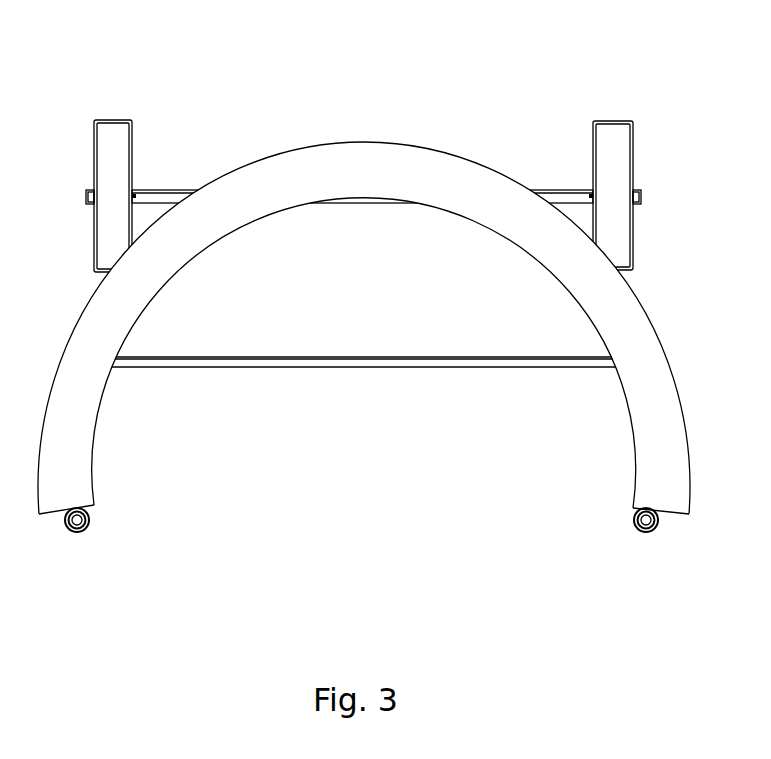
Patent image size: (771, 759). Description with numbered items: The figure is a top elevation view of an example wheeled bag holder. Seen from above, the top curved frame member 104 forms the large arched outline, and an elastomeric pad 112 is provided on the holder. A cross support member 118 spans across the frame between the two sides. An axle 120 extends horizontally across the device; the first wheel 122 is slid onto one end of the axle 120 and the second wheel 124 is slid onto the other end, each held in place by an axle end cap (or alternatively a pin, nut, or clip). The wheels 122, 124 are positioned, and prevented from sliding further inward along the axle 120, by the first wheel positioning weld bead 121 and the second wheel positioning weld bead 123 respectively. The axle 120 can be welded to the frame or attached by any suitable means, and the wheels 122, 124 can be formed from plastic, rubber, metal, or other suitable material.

The top curved frame member 104 is at (85, 528).
The elastomeric pad 112 is at (363, 176).
The cross support member 118 is at (247, 363).
The axle 120 is at (158, 197).
The first wheel positioning weld bead 121 is at (135, 190).
The first wheel 122 is at (113, 142).
The second wheel positioning weld bead 123 is at (592, 192).
The second wheel 124 is at (609, 155).